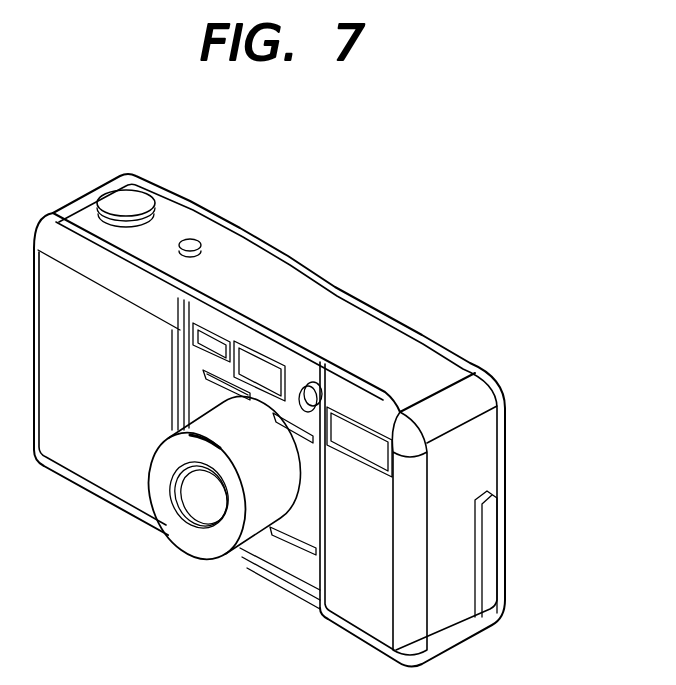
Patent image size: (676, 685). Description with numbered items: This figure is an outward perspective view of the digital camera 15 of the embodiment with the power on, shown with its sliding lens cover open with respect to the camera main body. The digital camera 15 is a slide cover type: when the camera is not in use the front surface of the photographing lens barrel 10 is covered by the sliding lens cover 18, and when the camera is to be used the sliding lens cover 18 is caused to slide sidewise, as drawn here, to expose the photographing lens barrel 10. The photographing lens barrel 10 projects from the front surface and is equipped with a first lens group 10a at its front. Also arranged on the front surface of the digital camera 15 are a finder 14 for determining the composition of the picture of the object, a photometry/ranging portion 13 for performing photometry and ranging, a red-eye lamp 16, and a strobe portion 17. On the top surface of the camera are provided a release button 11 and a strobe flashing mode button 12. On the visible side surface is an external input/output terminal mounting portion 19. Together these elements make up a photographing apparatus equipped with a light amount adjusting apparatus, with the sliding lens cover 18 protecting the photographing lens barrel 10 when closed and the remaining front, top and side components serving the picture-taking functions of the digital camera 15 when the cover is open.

The photographing lens barrel 10 is at (212, 545).
The first lens group 10a is at (200, 505).
The release button 11 is at (133, 200).
The strobe flashing mode button 12 is at (192, 242).
The photometry/ranging portion 13 is at (207, 338).
The finder 14 is at (253, 357).
The digital camera 15 is at (338, 312).
The red-eye lamp 16 is at (320, 382).
The strobe portion 17 is at (360, 438).
The sliding lens cover 18 is at (90, 457).
The external input/output terminal mounting portion 19 is at (492, 556).